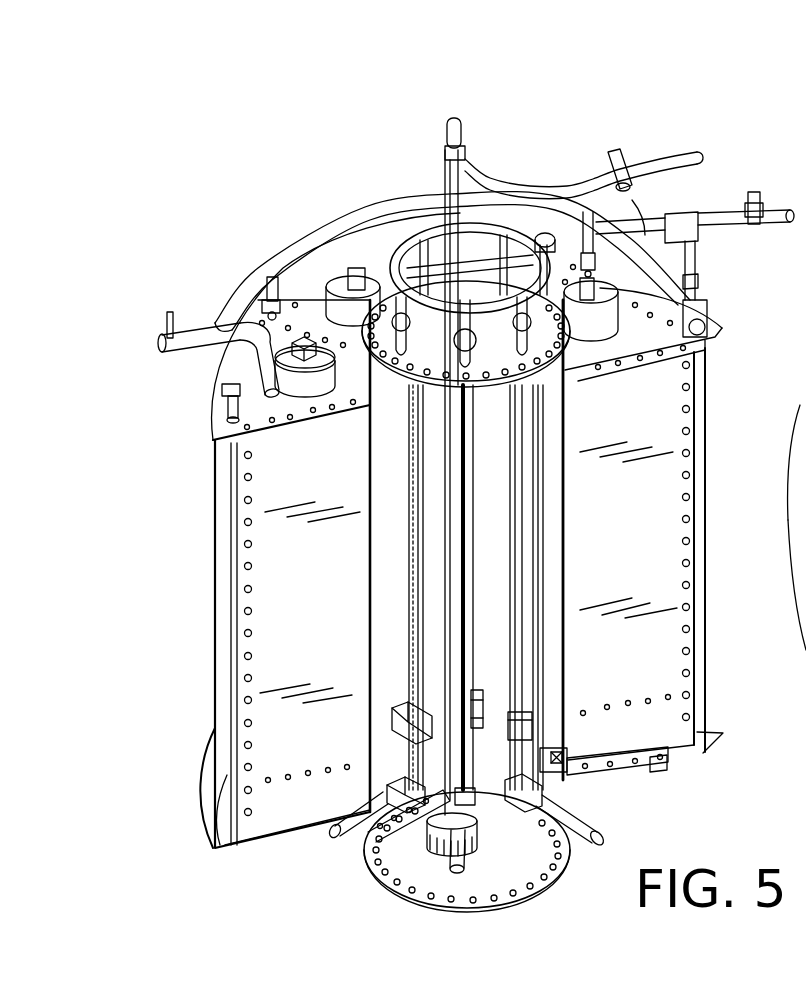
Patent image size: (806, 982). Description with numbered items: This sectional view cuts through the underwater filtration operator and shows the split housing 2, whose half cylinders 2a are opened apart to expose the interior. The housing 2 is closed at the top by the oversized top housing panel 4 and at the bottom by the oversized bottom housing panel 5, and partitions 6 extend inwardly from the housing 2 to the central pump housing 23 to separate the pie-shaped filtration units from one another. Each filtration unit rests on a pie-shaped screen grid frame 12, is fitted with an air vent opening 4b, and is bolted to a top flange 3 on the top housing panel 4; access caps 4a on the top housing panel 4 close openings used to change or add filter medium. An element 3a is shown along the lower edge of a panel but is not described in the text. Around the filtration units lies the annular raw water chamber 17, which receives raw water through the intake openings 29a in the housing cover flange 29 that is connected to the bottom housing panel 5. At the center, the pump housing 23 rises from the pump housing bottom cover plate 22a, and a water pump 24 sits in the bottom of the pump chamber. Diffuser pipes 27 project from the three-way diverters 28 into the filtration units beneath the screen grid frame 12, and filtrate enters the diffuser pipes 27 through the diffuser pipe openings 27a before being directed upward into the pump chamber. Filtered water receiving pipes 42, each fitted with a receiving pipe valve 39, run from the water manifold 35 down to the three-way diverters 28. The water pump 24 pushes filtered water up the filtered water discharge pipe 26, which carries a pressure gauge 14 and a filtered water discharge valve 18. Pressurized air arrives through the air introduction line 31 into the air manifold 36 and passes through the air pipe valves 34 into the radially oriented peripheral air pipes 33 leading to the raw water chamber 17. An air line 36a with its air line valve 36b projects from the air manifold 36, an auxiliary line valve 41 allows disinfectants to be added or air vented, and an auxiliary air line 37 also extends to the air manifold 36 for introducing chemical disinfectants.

The split housing 2 is at (212, 572).
The half cylinders 2a is at (228, 693).
The top flange 3 is at (620, 360).
The bottom flange strip 3a is at (672, 762).
The top housing panel 4 is at (205, 380).
The access caps 4a is at (315, 307).
The air vent opening 4b is at (707, 322).
The bottom housing panel 5 is at (218, 830).
The partitions 6 is at (263, 627).
The screen grid frame 12 is at (805, 520).
The pressure gauge 14 is at (442, 127).
The annular raw water chamber 17 is at (805, 580).
The filtered water discharge valve 18 is at (628, 160).
The pump housing bottom cover plate 22a is at (440, 880).
The pump housing 23 is at (360, 543).
The water pump 24 is at (482, 866).
The filtered water discharge pipe 26 is at (448, 188).
The diffuser pipes 27 is at (360, 833).
The diffuser pipe openings 27a is at (342, 828).
The three-way diverters 28 is at (395, 790).
The housing cover flange 29 is at (805, 603).
The intake openings 29a is at (795, 655).
The air introduction line 31 is at (195, 350).
The peripheral air pipes 33 is at (805, 367).
The air pipe valves 34 is at (268, 288).
The water manifold 35 is at (428, 325).
The air manifold 36 is at (339, 205).
The air line 36a is at (626, 260).
The air line valve 36b is at (642, 200).
The auxiliary air line 37 is at (545, 235).
The receiving pipe valve 39 is at (352, 385).
The auxiliary line valve 41 is at (752, 195).
The filtered water receiving pipes 42 is at (537, 565).